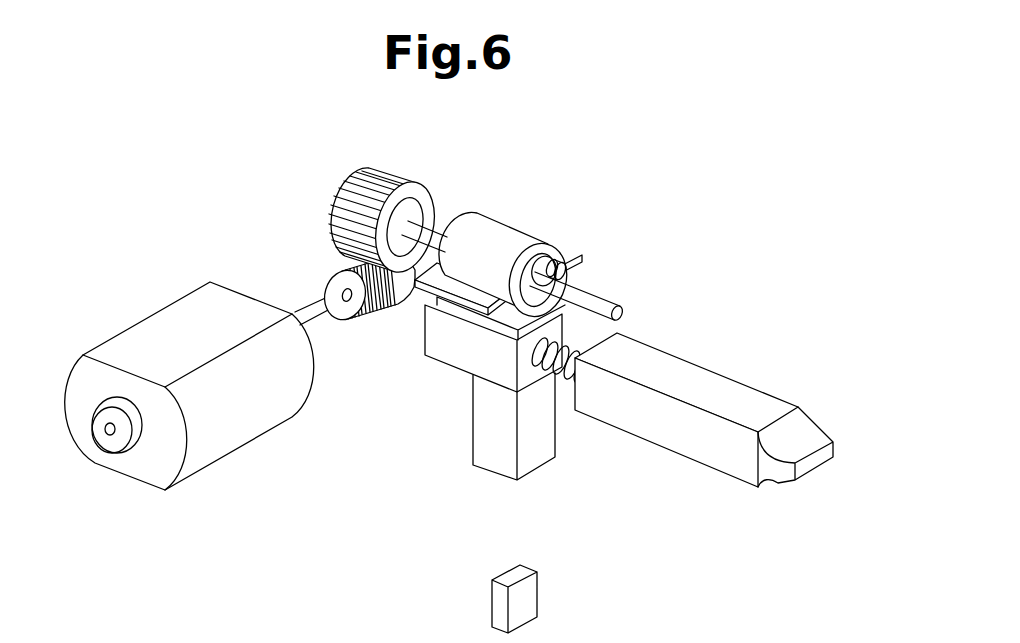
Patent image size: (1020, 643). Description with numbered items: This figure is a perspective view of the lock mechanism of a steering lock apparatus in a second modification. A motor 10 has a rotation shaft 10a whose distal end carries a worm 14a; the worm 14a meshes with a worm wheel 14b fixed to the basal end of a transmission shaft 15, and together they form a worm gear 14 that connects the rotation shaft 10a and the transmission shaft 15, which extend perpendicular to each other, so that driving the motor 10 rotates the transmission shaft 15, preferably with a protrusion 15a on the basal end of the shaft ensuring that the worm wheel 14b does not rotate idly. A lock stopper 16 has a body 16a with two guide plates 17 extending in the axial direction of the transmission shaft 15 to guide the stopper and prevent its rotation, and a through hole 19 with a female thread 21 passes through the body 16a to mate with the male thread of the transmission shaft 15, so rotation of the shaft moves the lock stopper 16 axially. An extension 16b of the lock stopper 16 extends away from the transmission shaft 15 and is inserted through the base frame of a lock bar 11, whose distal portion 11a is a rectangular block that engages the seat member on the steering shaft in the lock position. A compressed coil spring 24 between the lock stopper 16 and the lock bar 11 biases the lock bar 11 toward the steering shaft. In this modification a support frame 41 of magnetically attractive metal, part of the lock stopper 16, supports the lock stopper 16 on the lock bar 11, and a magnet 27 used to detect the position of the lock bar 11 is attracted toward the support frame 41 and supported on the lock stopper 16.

The motor 10 is at (147, 315).
The rotation shaft 10a is at (310, 305).
The worm gear 14 is at (261, 194).
The worm 14a is at (322, 270).
The worm wheel 14b is at (328, 207).
The transmission shaft 15 is at (617, 298).
The protrusion 15a is at (425, 212).
The lock stopper 16 is at (473, 466).
The body 16a is at (487, 213).
The extension 16b is at (478, 435).
The guide plate 17 is at (418, 275).
The through hole 19 is at (540, 257).
The female thread 21 is at (566, 268).
The coil spring 24 is at (566, 387).
The support frame 41 is at (433, 362).
The lock bar 11 is at (763, 392).
The distal portion 11a is at (733, 378).
The magnet 27 is at (538, 597).